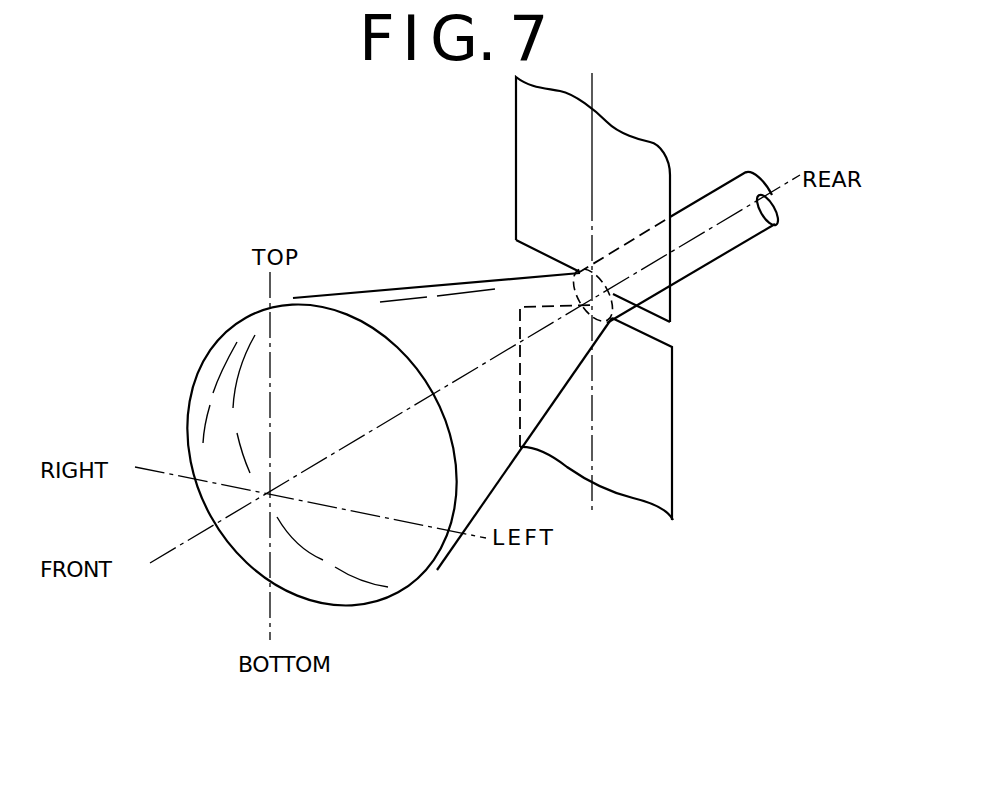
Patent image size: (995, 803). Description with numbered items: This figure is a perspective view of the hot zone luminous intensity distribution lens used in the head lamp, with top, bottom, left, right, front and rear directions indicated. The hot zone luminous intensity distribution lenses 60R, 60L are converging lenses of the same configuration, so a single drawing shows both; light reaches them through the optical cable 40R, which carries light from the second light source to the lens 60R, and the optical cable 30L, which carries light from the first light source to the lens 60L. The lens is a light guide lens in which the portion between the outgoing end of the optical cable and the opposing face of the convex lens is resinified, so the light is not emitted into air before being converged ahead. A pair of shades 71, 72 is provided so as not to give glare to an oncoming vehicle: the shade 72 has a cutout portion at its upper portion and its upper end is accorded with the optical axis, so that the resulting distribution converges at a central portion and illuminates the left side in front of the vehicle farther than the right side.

The shade 71 is at (517, 187).
The shade 72 is at (667, 452).
The optical cable 40R is at (697, 259).
The optical cable 30L is at (708, 257).
The hot zone luminous intensity distribution lens 60R is at (671, 444).
The hot zone luminous intensity distribution lens 60L is at (512, 462).